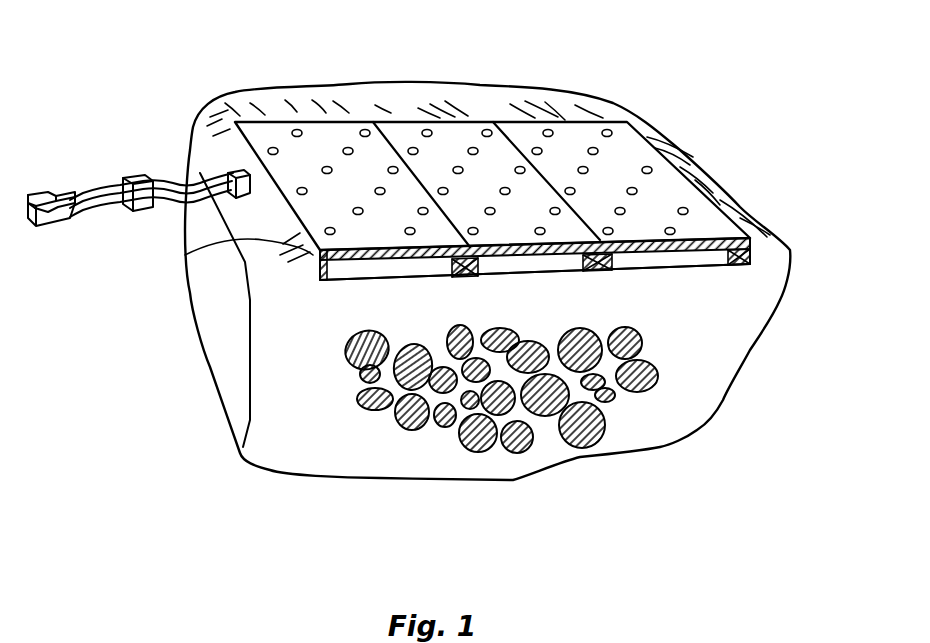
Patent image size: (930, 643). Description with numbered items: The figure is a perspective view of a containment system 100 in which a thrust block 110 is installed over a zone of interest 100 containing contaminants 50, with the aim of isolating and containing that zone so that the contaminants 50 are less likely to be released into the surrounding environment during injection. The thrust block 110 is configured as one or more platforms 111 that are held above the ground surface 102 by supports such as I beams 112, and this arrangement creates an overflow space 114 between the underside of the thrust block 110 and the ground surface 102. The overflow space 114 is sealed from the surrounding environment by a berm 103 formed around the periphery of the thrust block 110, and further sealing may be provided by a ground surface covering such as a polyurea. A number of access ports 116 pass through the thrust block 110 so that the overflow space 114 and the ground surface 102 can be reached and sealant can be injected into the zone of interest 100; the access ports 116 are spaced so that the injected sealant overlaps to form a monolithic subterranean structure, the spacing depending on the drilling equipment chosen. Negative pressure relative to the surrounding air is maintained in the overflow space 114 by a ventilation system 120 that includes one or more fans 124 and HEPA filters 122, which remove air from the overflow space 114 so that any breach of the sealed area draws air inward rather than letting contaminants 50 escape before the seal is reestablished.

The contaminants 50 is at (565, 448).
The containment system / zone of interest 100 is at (712, 337).
The ground surface 102 is at (362, 279).
The berm 103 is at (292, 247).
The thrust block 110 is at (634, 140).
The platform 111 is at (670, 177).
The I beam 112 is at (733, 267).
The overflow space 114 is at (350, 273).
The access port 116 is at (485, 129).
The ventilation system 120 is at (111, 107).
The HEPA filter 122 is at (136, 174).
The fan 124 is at (43, 198).